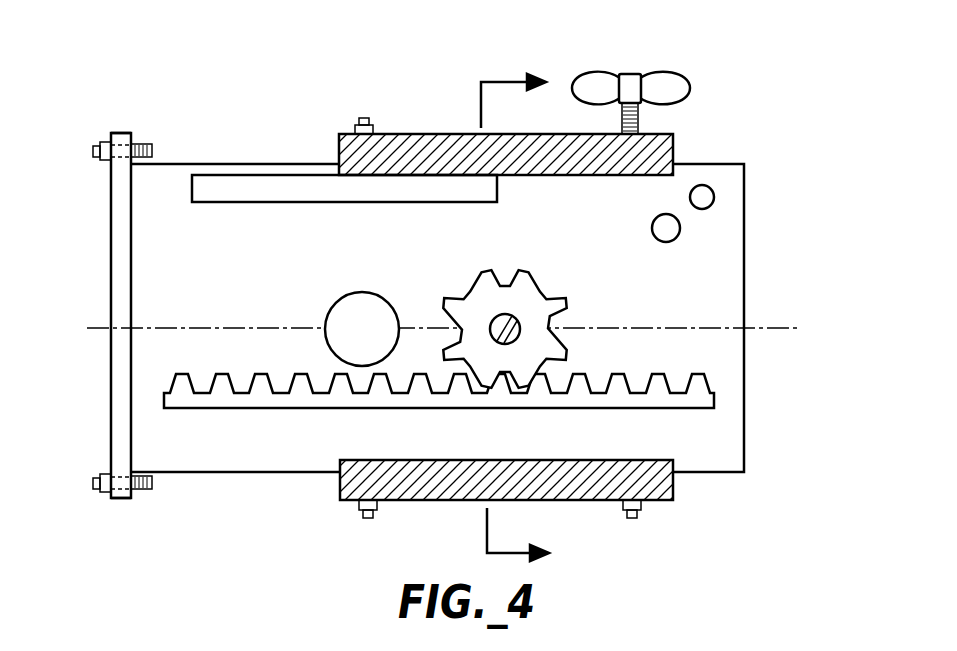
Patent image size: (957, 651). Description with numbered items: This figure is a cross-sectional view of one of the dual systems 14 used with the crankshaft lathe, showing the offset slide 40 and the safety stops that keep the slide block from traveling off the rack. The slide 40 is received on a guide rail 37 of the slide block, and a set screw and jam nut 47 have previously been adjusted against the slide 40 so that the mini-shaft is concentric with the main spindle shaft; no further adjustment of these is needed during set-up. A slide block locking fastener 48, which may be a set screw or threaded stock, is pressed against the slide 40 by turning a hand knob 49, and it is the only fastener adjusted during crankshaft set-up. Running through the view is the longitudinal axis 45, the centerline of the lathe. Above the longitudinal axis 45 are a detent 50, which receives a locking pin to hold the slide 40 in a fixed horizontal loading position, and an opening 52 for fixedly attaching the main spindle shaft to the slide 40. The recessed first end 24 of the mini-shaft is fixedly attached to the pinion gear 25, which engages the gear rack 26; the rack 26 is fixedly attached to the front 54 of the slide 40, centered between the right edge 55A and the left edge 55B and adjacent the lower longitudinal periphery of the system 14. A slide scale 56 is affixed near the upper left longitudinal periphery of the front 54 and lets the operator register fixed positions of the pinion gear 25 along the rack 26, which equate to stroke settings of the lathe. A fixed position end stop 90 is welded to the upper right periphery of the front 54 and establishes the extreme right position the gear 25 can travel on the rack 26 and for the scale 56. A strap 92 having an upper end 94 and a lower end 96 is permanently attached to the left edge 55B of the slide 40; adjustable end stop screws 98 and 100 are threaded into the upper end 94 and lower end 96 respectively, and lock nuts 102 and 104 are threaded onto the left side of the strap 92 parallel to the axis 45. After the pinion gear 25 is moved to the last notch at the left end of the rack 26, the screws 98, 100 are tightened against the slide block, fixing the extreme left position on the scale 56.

The dual system 14 is at (767, 88).
The recessed first end 24 is at (512, 320).
The pinion gear 25 is at (540, 275).
The gear rack 26 is at (735, 383).
The guide rail 37 is at (675, 168).
The offset slide 40 is at (752, 220).
The longitudinal axis 45 is at (222, 328).
The set screw and jam nut 47 is at (363, 117).
The slide block locking fastener 48 is at (641, 125).
The hand knob 49 is at (640, 73).
The detent 50 is at (680, 232).
The opening 52 is at (368, 292).
The front 54 is at (305, 460).
The right edge 55A is at (725, 438).
The left edge 55B is at (133, 445).
The slide scale 56 is at (302, 175).
The fixed position end stop 90 is at (714, 189).
The strap 92 is at (111, 250).
The upper end 94 is at (126, 133).
The lower end 96 is at (120, 500).
The adjustable end stop screw 98 is at (150, 143).
The adjustable end stop screw 100 is at (148, 492).
The lock nut 102 is at (103, 142).
The lock nut 104 is at (103, 474).